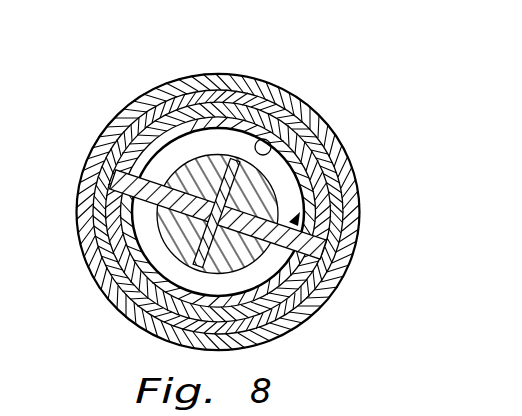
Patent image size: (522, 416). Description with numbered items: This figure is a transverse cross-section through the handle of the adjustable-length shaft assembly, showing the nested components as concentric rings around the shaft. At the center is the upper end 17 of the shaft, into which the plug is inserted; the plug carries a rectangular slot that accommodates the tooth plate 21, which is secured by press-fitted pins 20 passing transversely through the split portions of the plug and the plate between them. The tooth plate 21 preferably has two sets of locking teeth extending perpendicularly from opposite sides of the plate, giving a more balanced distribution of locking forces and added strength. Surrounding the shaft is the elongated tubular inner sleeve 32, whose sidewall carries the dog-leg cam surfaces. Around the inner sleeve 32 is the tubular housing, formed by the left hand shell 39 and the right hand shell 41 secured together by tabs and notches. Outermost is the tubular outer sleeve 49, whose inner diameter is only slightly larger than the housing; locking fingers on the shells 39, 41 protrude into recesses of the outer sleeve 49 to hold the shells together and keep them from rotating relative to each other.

The upper end 17 is at (344, 148).
The press-fitted pins 20 is at (209, 264).
The tooth plate 21 is at (348, 194).
The inner sleeve 32 is at (280, 190).
The left hand shell 39 is at (97, 261).
The right hand shell 41 is at (331, 237).
The outer sleeve 49 is at (263, 105).